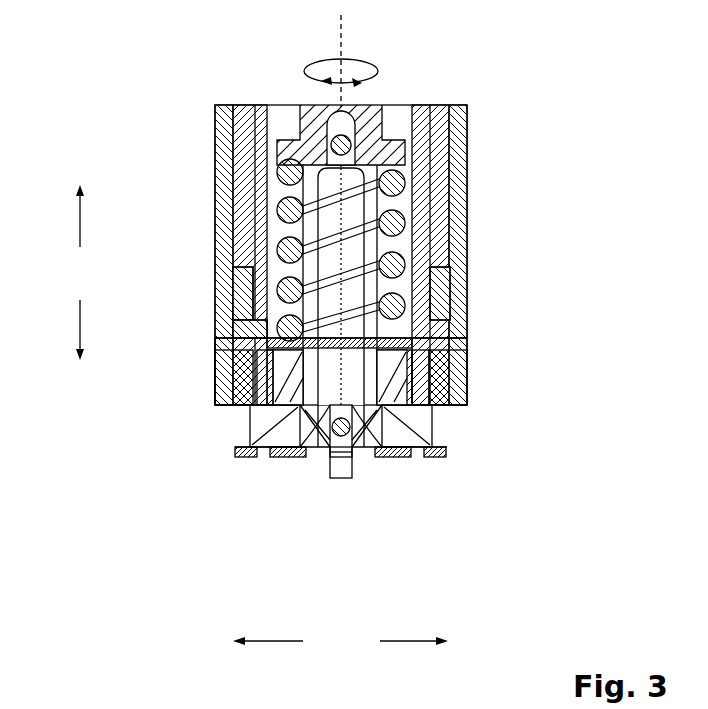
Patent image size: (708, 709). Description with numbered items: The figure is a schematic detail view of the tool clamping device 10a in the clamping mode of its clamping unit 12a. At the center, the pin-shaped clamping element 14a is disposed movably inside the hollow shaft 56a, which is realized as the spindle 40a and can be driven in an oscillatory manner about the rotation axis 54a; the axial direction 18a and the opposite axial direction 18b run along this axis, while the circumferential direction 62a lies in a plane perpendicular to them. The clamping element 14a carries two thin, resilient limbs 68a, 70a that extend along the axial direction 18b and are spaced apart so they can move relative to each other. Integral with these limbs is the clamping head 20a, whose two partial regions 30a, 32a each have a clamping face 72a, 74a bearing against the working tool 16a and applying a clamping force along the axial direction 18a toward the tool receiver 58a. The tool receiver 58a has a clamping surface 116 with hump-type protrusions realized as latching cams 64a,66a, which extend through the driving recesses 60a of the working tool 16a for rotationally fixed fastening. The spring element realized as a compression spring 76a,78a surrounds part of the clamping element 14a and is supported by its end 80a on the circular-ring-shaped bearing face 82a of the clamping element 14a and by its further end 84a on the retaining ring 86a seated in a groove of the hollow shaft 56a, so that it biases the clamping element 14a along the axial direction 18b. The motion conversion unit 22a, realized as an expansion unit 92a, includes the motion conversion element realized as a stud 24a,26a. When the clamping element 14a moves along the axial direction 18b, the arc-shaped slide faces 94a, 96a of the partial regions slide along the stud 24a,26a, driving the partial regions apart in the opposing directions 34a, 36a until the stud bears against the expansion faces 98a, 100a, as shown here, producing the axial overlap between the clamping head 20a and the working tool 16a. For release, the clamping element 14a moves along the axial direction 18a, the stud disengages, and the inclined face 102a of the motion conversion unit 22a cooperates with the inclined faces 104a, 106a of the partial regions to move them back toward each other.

The tool clamping device 10a is at (502, 77).
The clamping unit 12a is at (205, 491).
The clamping element 14a is at (340, 125).
The working tool 16a is at (430, 448).
The axial direction 18a is at (80, 222).
The axial direction 18b is at (80, 322).
The clamping head 20a is at (300, 455).
The motion conversion unit 22a is at (219, 424).
The motion conversion element, stud 24a,26a is at (417, 403).
The partial region 30a is at (293, 492).
The partial region 32a is at (372, 480).
The opposing direction 34a is at (275, 641).
The opposing direction 36a is at (402, 641).
The spindle 40a is at (427, 198).
The rotation axis 54a is at (340, 38).
The hollow shaft 56a is at (442, 250).
The tool receiver 58a is at (442, 362).
The driving recess 60a is at (382, 440).
The circumferential direction 62a is at (357, 58).
The hump-type protrusion, latching cam 64a,66a is at (320, 415).
The limb 68a is at (255, 230).
The limb 70a is at (437, 300).
The clamping face 72a is at (293, 455).
The clamping face 74a is at (405, 478).
The spring element, compression spring 76a,78a is at (430, 195).
The end 80a is at (221, 150).
The bearing face 82a is at (272, 167).
The further end 84a is at (447, 345).
The retaining ring 86a is at (242, 335).
The expansion unit 92a is at (212, 408).
The slide face 94a is at (300, 404).
The slide face 96a is at (392, 470).
The expansion face 98a is at (336, 470).
The expansion face 100a is at (362, 470).
The inclined face 102a is at (397, 415).
The inclined face 104a is at (335, 428).
The inclined face 106a is at (407, 437).
The clamping surface 116 is at (372, 440).